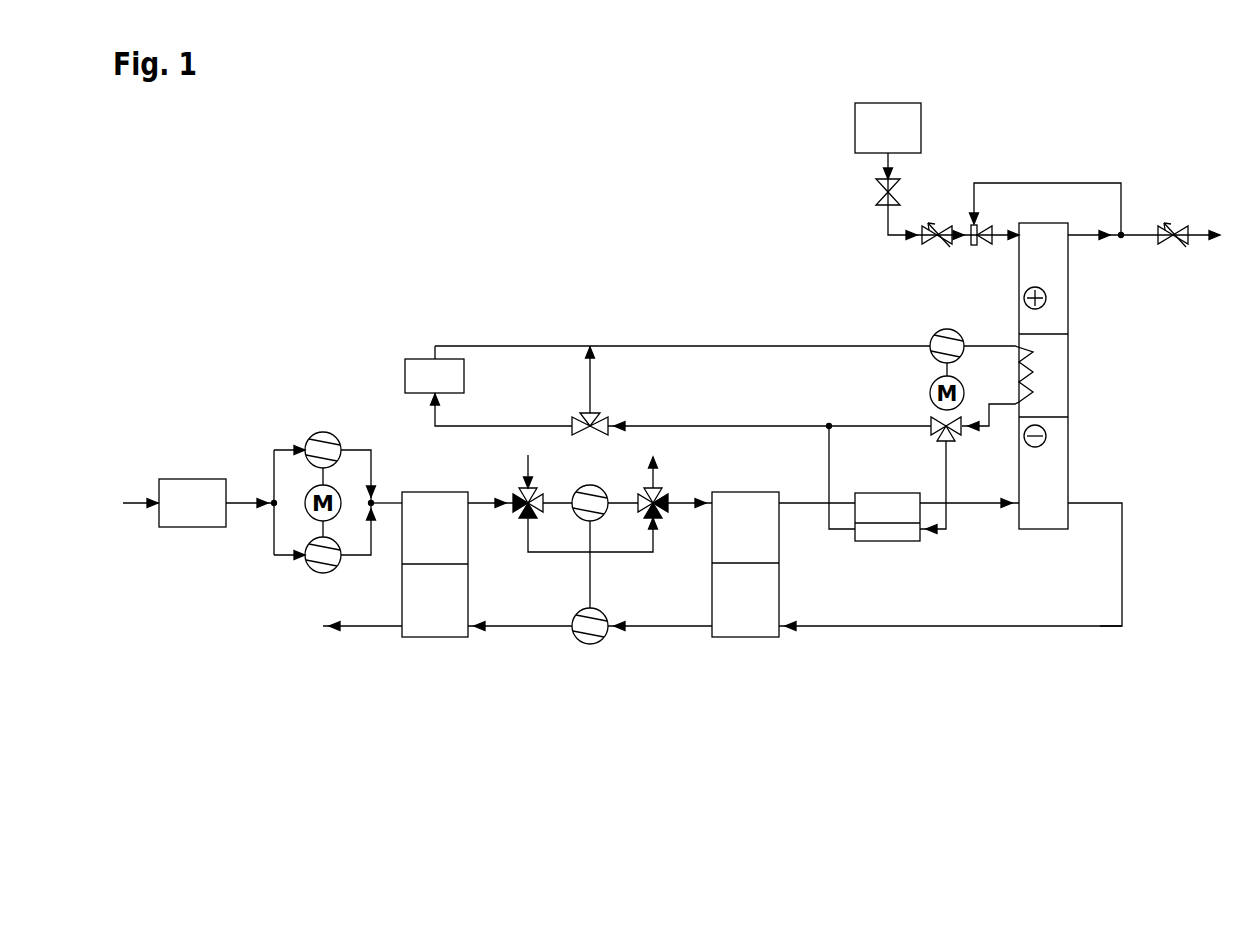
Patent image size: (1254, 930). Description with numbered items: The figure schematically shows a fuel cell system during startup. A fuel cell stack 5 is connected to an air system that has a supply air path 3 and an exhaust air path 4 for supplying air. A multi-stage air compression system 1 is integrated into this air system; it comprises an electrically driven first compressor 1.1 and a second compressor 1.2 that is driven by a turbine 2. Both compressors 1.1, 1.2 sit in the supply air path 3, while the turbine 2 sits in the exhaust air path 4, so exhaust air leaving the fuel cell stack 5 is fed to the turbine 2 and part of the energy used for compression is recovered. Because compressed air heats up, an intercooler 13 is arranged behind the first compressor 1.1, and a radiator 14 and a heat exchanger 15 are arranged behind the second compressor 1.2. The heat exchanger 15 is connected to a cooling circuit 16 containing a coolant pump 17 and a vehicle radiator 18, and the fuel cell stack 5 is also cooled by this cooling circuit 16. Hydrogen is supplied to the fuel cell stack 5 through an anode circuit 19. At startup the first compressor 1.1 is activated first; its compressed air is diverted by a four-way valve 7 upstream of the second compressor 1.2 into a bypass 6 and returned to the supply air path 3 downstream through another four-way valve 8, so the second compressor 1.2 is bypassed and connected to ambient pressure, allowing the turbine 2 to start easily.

The multi-stage air compression system 1 is at (457, 479).
The first compressor 1.1 is at (334, 440).
The second compressor 1.2 is at (600, 488).
The turbine 2 is at (592, 645).
The supply air path 3 is at (133, 502).
The exhaust air path 4 is at (895, 628).
The fuel cell stack 5 is at (1104, 325).
The bypass 6 is at (653, 553).
The valve 7 is at (544, 500).
The another valve 8 is at (669, 500).
The intercooler 13 is at (435, 492).
The radiator 14 is at (747, 492).
The heat exchanger 15 is at (888, 493).
The cooling circuit 16 is at (683, 345).
The coolant pump 17 is at (947, 329).
The vehicle radiator 18 is at (423, 358).
The anode circuit 19 is at (1100, 145).